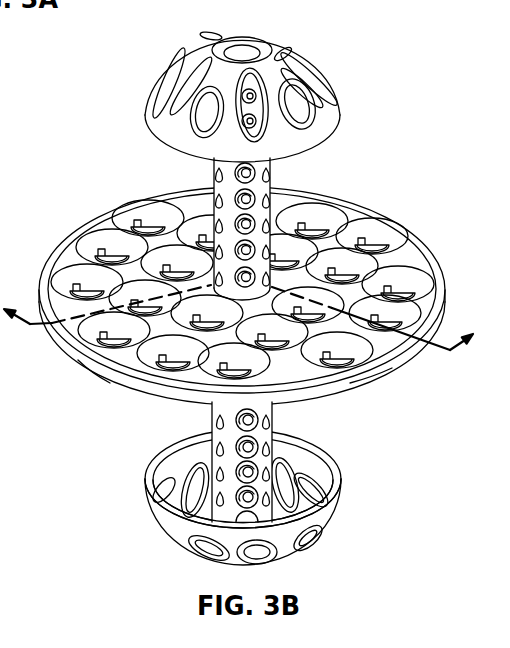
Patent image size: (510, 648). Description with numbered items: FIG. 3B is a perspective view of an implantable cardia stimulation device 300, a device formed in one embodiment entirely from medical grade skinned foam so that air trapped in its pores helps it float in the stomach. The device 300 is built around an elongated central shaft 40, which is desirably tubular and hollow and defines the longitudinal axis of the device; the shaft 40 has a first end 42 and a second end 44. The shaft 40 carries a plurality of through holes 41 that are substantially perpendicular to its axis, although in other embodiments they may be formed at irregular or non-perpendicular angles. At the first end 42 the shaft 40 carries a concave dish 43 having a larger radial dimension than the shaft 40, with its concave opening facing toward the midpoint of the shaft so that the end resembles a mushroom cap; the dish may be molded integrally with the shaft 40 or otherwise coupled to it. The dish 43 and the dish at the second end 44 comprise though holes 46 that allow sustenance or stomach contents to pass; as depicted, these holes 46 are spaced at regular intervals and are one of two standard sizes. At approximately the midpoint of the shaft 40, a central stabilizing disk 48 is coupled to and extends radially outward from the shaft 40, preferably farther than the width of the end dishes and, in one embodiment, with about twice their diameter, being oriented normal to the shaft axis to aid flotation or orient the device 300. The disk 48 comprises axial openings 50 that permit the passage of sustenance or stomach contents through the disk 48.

The implantable cardia stimulation device 300 is at (238, 282).
The elongated central shaft 40 is at (243, 339).
The through holes 41 is at (271, 191).
The first end 42 is at (258, 41).
The concave dish 43 is at (264, 81).
The second end 44 is at (243, 479).
The though holes 46 is at (296, 95).
The central stabilizing disk 48 is at (393, 367).
The axial openings 50 is at (343, 273).